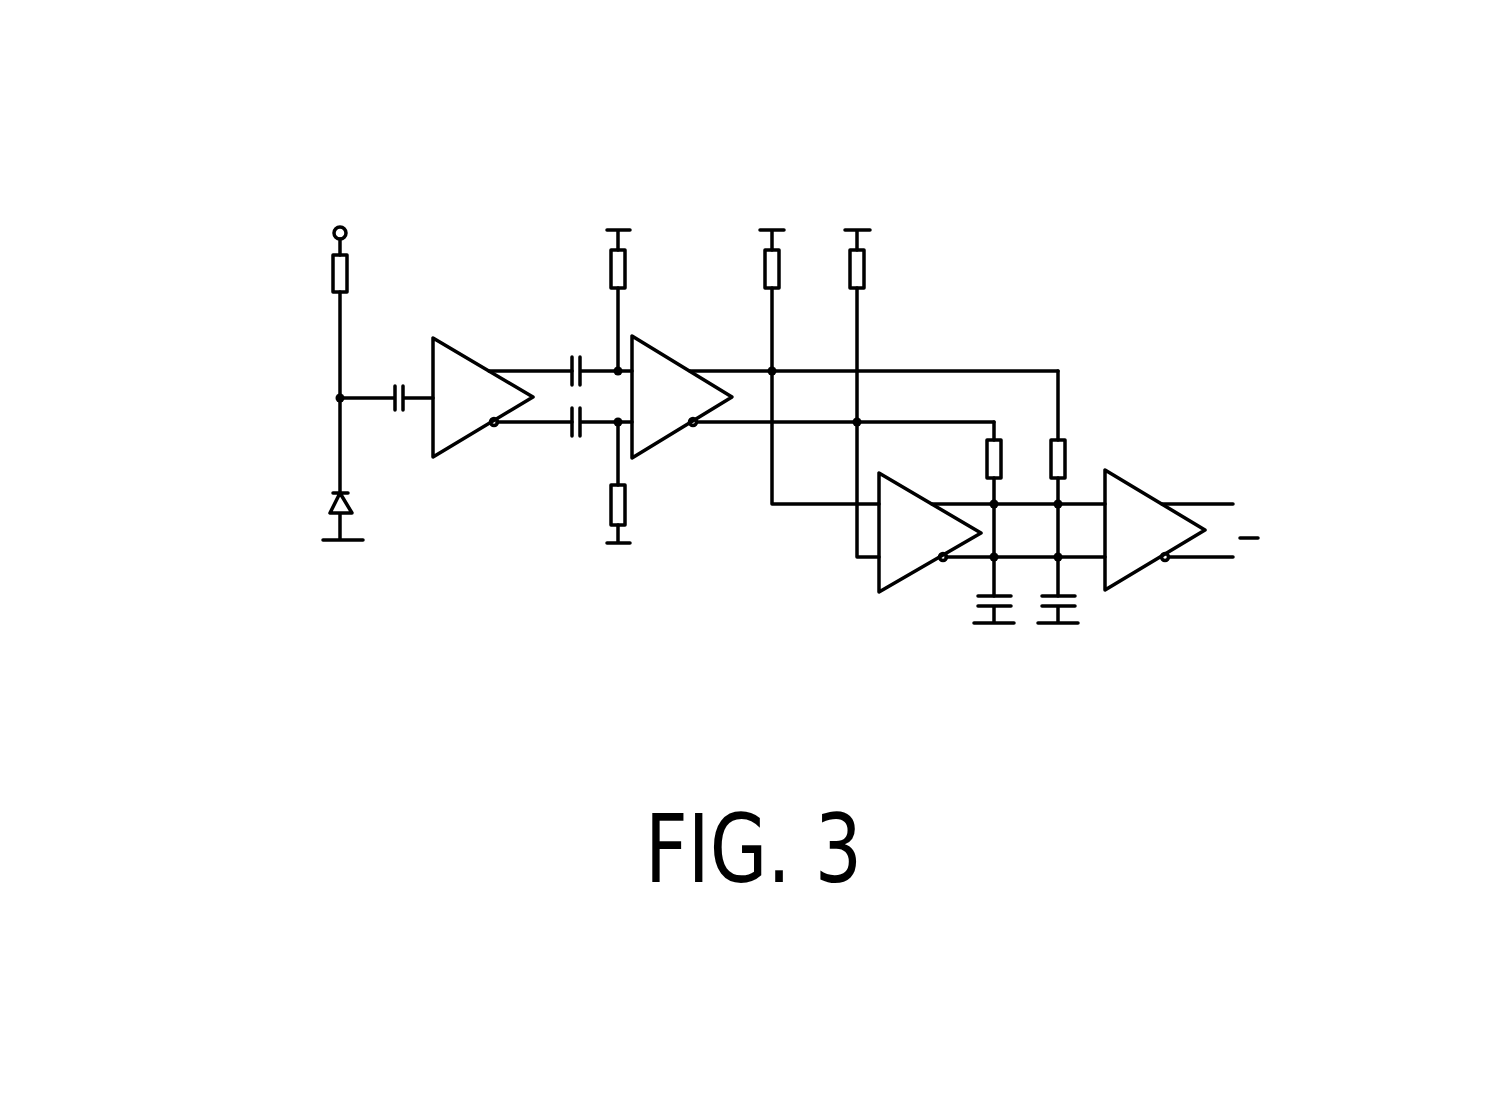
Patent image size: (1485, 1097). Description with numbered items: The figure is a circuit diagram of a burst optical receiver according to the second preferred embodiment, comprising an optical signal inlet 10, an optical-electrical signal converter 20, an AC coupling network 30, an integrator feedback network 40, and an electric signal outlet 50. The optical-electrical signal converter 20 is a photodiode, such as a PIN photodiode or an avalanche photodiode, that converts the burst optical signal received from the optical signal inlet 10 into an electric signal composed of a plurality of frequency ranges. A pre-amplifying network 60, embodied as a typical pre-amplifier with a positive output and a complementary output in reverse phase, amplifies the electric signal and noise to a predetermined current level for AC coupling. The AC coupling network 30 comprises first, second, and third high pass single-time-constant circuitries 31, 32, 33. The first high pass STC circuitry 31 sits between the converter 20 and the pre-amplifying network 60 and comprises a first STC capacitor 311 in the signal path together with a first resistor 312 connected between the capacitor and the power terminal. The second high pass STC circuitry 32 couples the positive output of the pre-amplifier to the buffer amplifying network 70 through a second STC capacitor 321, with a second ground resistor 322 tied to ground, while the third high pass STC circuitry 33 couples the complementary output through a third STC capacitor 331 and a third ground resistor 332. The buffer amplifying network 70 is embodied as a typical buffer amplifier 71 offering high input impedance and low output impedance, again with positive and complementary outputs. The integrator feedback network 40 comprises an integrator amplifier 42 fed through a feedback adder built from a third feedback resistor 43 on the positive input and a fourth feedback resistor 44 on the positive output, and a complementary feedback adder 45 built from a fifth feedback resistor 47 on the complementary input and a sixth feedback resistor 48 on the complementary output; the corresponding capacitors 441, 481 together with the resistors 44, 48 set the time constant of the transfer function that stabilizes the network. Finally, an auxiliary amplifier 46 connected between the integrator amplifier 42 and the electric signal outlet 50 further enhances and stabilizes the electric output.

The optical signal inlet 10 is at (315, 354).
The optical-electrical signal converter 20 is at (264, 544).
The first high pass single-time-constant circuitry 31 is at (320, 333).
The first STC capacitor 311 is at (289, 373).
The first resistor 312 is at (257, 341).
The AC coupling network 30 is at (642, 385).
The second high pass single-time-constant circuitry 32 is at (700, 204).
The second STC capacitor 321 is at (614, 248).
The second ground resistor 322 is at (701, 260).
The third high pass single-time-constant circuitry 33 is at (572, 577).
The third STC capacitor 331 is at (556, 491).
The third ground resistor 332 is at (641, 553).
The pre-amplifying network 60 is at (471, 496).
The buffer amplifying network 70 is at (845, 445).
The buffer amplifier 71 is at (695, 361).
The integrator feedback network 40 is at (1054, 439).
The integrator amplifier 42 is at (992, 448).
The third feedback resistor 43 is at (845, 305).
The fourth feedback resistor 44 is at (1053, 450).
The capacitor 441 is at (944, 684).
The complementary feedback adder 45 is at (1064, 488).
The auxiliary amplifier 46 is at (1227, 499).
The fifth feedback resistor 47 is at (937, 337).
The sixth feedback resistor 48 is at (1152, 483).
The capacitor 481 is at (1125, 675).
The electric signal outlet 50 is at (1318, 518).